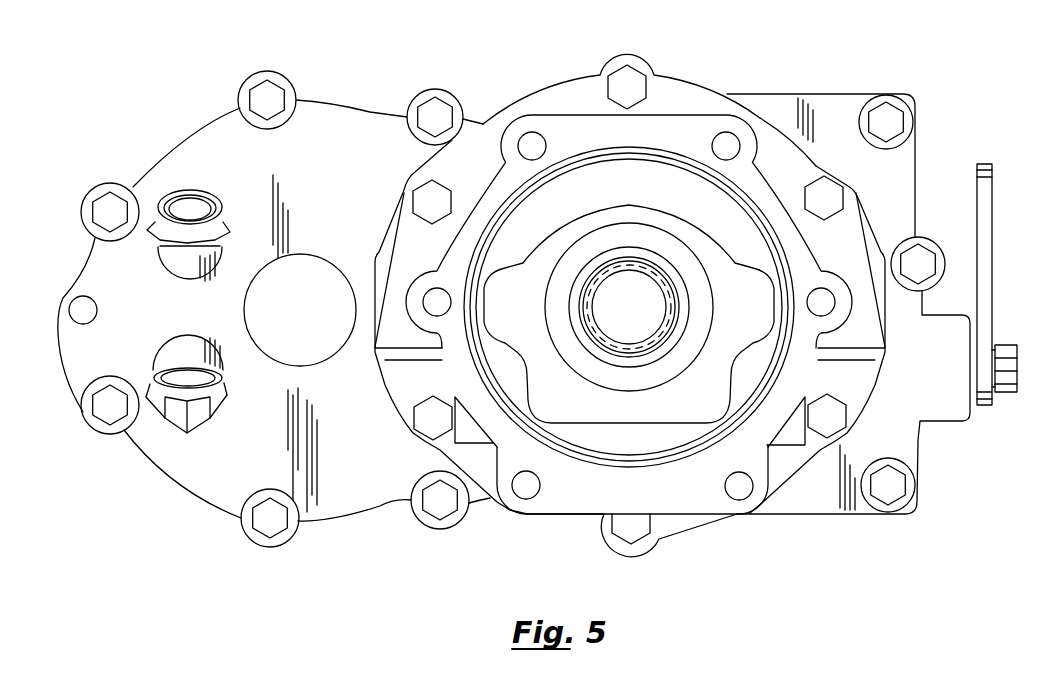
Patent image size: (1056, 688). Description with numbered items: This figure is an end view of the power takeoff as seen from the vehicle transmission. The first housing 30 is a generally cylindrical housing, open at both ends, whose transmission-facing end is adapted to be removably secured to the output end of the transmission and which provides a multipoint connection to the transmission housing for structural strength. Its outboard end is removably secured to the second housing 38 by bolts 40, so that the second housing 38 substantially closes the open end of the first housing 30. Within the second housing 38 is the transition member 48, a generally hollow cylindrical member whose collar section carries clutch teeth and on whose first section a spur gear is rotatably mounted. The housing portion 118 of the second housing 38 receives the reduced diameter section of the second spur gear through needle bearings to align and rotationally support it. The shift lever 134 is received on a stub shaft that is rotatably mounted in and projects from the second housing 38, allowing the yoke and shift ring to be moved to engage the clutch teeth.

The first housing 30 is at (807, 166).
The second housing 38 is at (698, 83).
The bolts 40 is at (627, 87).
The transition member 48 is at (641, 263).
The housing portion 118 is at (323, 360).
The shift lever 134 is at (993, 232).